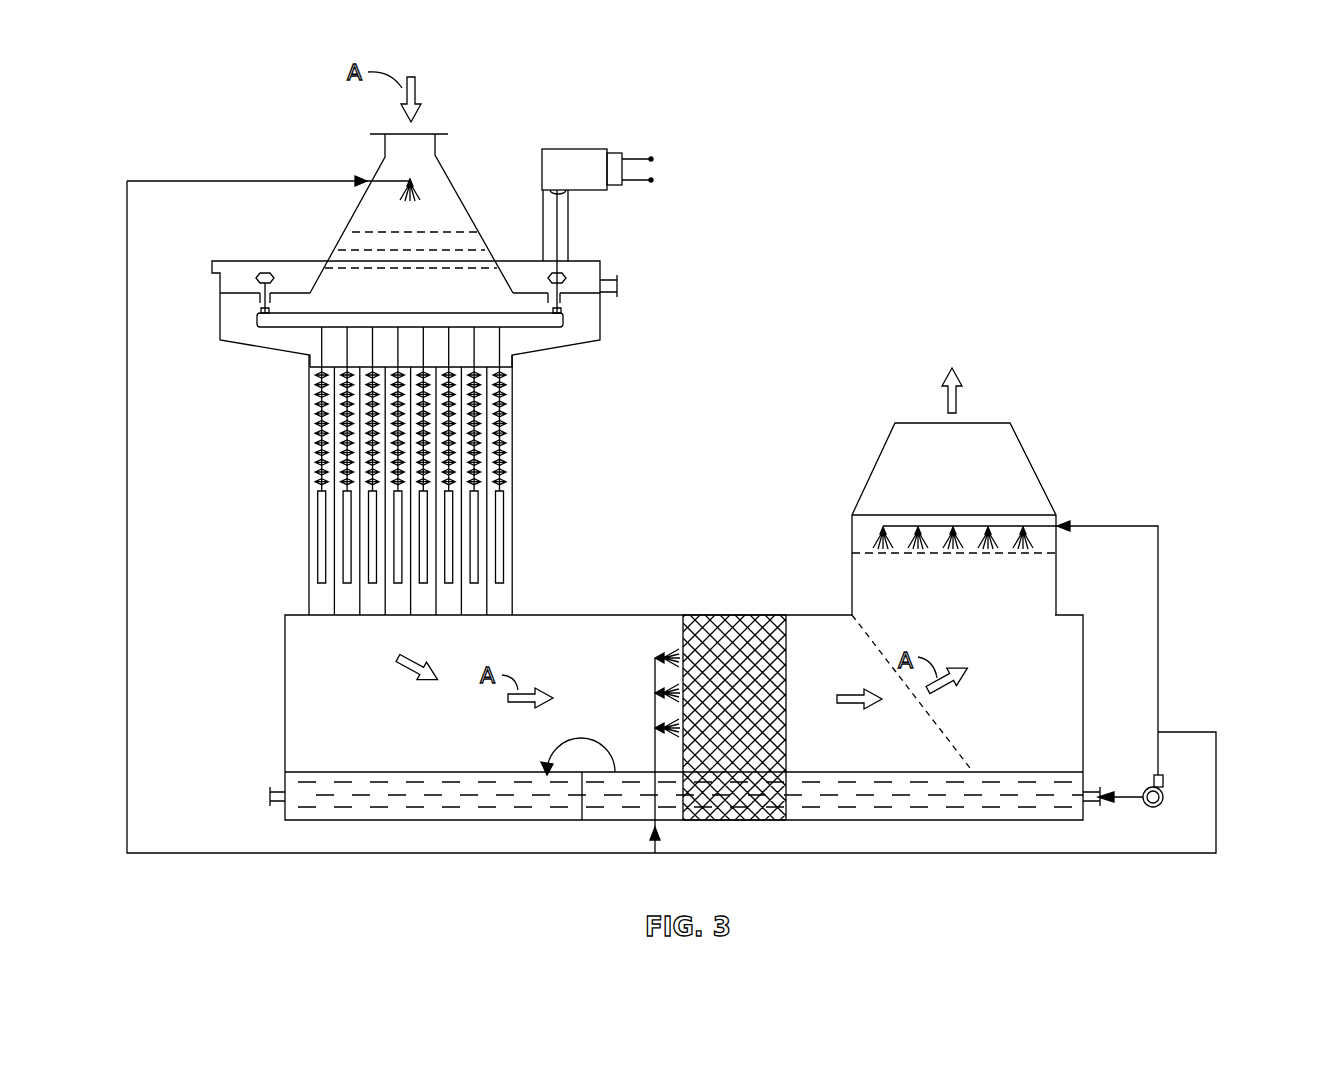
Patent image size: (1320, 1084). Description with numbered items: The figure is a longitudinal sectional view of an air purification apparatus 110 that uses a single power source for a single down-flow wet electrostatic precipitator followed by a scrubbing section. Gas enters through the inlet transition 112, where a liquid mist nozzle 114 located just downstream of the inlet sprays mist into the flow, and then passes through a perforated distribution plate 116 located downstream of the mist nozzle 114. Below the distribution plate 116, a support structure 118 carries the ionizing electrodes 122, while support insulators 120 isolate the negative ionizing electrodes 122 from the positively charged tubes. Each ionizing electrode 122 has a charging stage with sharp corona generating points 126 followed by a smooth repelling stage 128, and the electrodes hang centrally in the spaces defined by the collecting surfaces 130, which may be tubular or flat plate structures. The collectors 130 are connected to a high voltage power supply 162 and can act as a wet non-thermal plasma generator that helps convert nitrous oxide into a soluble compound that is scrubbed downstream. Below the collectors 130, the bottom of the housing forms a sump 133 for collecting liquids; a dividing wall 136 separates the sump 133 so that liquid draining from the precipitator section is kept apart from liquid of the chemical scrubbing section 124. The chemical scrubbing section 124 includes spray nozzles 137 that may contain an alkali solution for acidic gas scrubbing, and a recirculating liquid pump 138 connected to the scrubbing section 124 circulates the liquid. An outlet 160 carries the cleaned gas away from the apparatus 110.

The apparatus 110 is at (881, 135).
The inlet transition 112 is at (378, 133).
The liquid mist nozzle 114 is at (388, 179).
The perforated distribution plate 116 is at (353, 248).
The support structure 118 is at (563, 320).
The support insulators 120 is at (567, 280).
The ionizing electrodes 122 is at (481, 452).
The chemical scrubbing section 124 is at (738, 823).
The sharp corona generating points 126 is at (481, 480).
The smooth repelling stage 128 is at (479, 533).
The collecting surfaces 130 is at (358, 551).
The sump 133 is at (365, 797).
The dividing wall 136 is at (578, 795).
The spray nozzles 137 is at (653, 682).
The liquid circulation pump 138 is at (1165, 797).
The exhaust hood 160 is at (1025, 448).
The high voltage power supply 162 is at (572, 149).